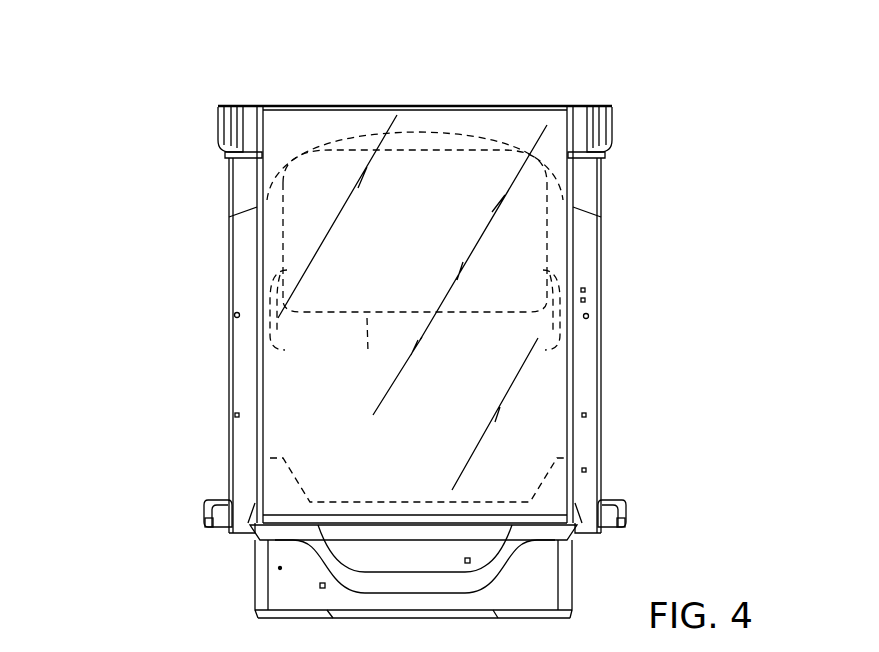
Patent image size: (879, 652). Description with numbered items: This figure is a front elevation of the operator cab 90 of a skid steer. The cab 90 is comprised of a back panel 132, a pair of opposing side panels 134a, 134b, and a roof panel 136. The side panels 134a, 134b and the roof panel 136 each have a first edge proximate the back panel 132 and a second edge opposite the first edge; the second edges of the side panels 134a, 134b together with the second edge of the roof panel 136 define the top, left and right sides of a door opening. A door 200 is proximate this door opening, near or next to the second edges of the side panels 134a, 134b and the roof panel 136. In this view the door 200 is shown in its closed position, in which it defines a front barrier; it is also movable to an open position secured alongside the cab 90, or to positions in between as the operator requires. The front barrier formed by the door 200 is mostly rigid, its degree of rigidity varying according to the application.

The cab 90 is at (179, 63).
The roof panel 136 is at (352, 108).
The right-side panel 134b is at (257, 231).
The left side panel 134a is at (577, 240).
The back panel 132 is at (375, 312).
The door 200 is at (342, 355).